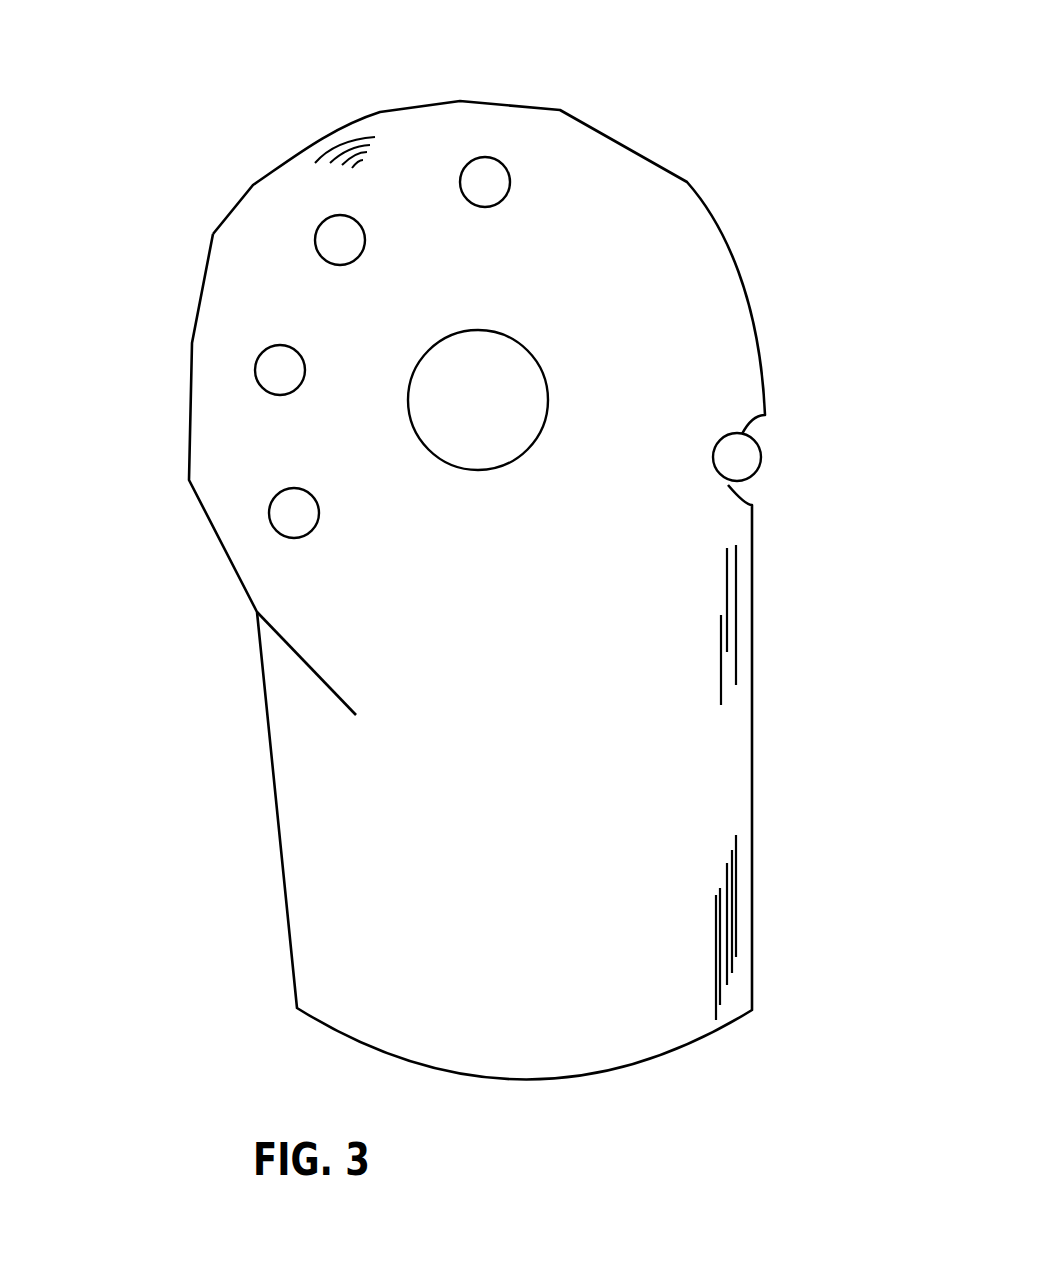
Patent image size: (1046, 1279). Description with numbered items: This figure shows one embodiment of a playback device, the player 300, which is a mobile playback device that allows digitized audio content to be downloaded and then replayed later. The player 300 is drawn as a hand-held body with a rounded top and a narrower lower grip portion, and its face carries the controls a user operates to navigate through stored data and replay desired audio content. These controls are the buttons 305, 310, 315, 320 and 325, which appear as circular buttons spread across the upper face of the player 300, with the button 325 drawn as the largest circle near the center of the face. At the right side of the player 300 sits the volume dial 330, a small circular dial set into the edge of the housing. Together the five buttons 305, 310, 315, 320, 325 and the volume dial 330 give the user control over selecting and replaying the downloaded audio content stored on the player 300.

The player 300 is at (689, 1031).
The button 305 is at (270, 507).
The button 310 is at (257, 360).
The button 315 is at (318, 228).
The button 320 is at (500, 158).
The button 325 is at (543, 367).
The volume dial 330 is at (758, 445).